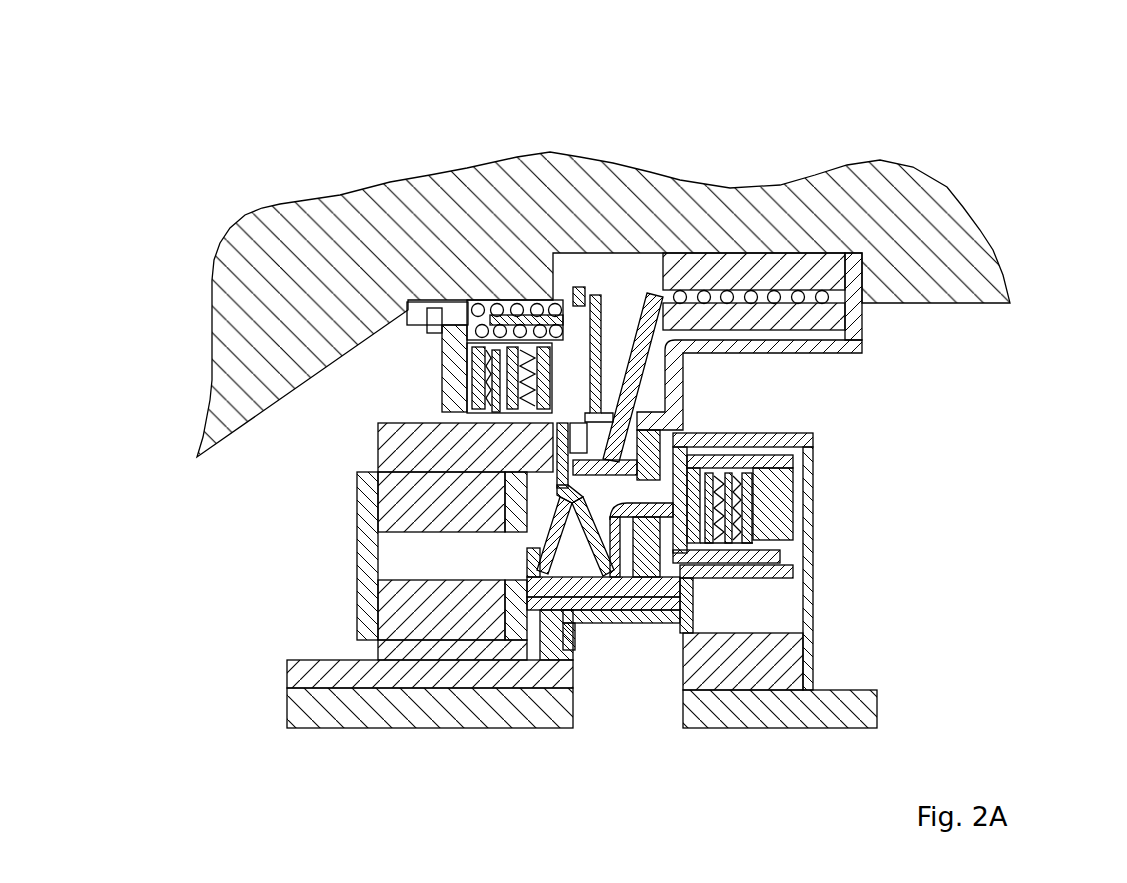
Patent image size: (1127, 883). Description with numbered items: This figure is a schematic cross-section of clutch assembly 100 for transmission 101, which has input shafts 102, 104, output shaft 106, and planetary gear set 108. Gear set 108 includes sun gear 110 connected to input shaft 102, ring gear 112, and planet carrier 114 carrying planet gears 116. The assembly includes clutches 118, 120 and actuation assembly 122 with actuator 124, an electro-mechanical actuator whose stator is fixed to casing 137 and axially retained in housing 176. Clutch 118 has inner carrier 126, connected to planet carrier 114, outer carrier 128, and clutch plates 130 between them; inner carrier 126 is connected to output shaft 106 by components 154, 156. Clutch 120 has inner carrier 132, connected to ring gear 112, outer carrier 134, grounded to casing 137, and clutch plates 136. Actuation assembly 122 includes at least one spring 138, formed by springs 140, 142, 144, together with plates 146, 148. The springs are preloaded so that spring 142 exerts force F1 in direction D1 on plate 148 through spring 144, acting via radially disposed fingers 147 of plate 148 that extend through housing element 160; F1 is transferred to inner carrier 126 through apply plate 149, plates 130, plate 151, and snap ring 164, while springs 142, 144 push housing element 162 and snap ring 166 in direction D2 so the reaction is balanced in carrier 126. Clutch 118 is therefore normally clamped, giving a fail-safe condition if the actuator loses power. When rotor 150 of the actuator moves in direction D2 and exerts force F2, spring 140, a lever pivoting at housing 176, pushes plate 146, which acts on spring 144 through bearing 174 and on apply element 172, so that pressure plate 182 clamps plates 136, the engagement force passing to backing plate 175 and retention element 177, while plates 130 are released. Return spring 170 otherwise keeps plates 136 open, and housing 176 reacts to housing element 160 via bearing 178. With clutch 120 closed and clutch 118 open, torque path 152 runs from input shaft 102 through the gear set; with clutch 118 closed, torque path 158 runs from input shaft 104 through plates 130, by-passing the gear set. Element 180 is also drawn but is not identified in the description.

The clutch assembly 100 is at (718, 200).
The transmission 101 is at (900, 105).
The input shaft 102 is at (287, 668).
The input shaft 104 is at (287, 703).
The output shaft 106 is at (877, 705).
The planetary gear set 108 is at (330, 566).
The sun gear 110 is at (370, 648).
The ring gear 112 is at (377, 458).
The planet carrier 114 is at (357, 507).
The planet gears 116 is at (357, 620).
The clutch 118 is at (763, 592).
The clutch 120 is at (326, 223).
The actuation assembly 122 is at (612, 263).
The actuator 124 is at (834, 188).
The inner carrier 126 is at (813, 555).
The outer carrier 128 is at (790, 466).
The clutch plates 130 is at (762, 512).
The inner carrier 132 is at (437, 417).
The outer carrier 134 is at (213, 283).
The clutch plates 136 is at (448, 352).
The casing 137 is at (340, 235).
The spring 138 is at (676, 440).
The spring 140 is at (652, 392).
The spring 142 is at (525, 548).
The spring 144 is at (502, 650).
The plate 146 is at (580, 405).
The fingers 147 is at (688, 650).
The plate 148 is at (612, 600).
The apply plate 149 is at (750, 458).
The rotor 150 is at (813, 318).
The plate 151 is at (750, 477).
The torque path 152 is at (813, 585).
The component 154 is at (770, 448).
The component 156 is at (813, 640).
The torque path 158 is at (836, 592).
The housing element 160 is at (660, 600).
The housing element 162 is at (535, 548).
The snap ring 164 is at (770, 537).
The snap ring 166 is at (537, 640).
The return spring 170 is at (455, 300).
The apply element 172 is at (590, 297).
The bearing 174 is at (470, 352).
The backing plate 175 is at (447, 368).
The housing 176 is at (862, 318).
The retention element 177 is at (420, 262).
The bearing 178 is at (560, 302).
The stop block 180 is at (430, 320).
The pressure plate 182 is at (528, 300).
The force F1 is at (660, 510).
The force F2 is at (632, 318).
The direction D1 is at (1100, 148).
The direction D2 is at (1043, 170).